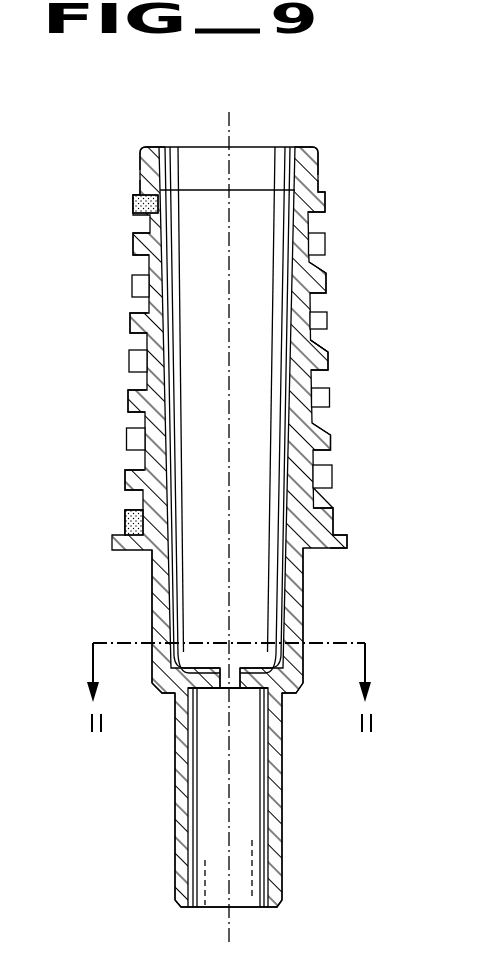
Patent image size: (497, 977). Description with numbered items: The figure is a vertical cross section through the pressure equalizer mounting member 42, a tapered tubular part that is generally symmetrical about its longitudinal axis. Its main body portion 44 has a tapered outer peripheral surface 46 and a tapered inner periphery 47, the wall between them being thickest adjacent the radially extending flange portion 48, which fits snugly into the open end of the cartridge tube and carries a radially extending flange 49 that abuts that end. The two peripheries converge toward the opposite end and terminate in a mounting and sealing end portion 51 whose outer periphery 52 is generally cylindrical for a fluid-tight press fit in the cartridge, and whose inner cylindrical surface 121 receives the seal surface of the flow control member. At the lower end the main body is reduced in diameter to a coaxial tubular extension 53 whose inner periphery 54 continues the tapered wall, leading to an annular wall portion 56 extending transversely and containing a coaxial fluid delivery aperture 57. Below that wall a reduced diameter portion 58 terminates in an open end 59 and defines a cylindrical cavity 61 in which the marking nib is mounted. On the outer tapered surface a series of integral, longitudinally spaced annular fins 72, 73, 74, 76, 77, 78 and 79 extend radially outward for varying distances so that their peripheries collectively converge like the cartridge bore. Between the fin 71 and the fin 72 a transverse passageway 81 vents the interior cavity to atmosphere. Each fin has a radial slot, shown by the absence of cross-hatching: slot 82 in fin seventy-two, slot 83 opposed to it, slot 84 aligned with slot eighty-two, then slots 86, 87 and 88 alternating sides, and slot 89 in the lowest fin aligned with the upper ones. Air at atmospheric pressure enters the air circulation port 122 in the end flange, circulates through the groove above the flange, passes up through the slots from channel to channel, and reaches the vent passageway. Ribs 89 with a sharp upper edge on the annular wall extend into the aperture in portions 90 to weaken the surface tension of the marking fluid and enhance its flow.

The pressure equalizer mounting member 42 is at (104, 287).
The main body portion 44 is at (311, 497).
The tapered outer peripheral surface 46 is at (312, 338).
The tapered inner periphery 47 is at (292, 410).
The radially extending flange portion 48 is at (320, 525).
The radially extending flange 49 is at (346, 542).
The mounting and sealing end portion 51 is at (316, 165).
The outer periphery 52 is at (138, 160).
The coaxial tubular extension 53 is at (157, 594).
The inner periphery 54 is at (285, 597).
The annular wall portion 56 is at (205, 680).
The fluid delivery aperture 57 is at (237, 690).
The reduced diameter portion 58 is at (275, 830).
The open end 59 is at (240, 908).
The cylindrical cavity 61 is at (215, 815).
The fin 71 is at (135, 197).
The annular fin 72 is at (140, 248).
The annular fin 73 is at (318, 283).
The annular fin 74 is at (138, 325).
The annular fin 76 is at (318, 360).
The annular fin 77 is at (138, 405).
The annular fin 78 is at (320, 437).
The annular fin 79 is at (133, 483).
The transverse passageway 81 is at (195, 214).
The slot 82 is at (320, 244).
The slot 83 is at (138, 290).
The slot 84 is at (318, 320).
The slot 86 is at (137, 360).
The slot 87 is at (320, 396).
The slot 88 is at (138, 440).
The slot 89 is at (322, 478).
The rib portions 90 is at (232, 690).
The inner cylindrical surface 121 is at (221, 181).
The air circulation port 122 is at (128, 525).